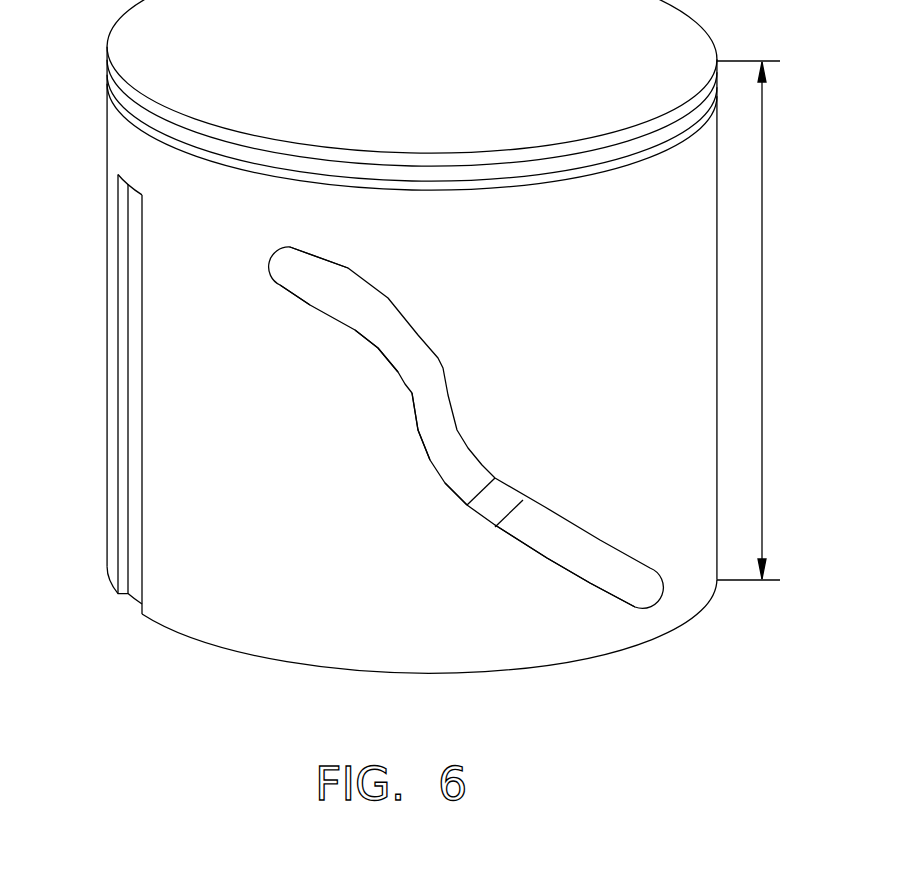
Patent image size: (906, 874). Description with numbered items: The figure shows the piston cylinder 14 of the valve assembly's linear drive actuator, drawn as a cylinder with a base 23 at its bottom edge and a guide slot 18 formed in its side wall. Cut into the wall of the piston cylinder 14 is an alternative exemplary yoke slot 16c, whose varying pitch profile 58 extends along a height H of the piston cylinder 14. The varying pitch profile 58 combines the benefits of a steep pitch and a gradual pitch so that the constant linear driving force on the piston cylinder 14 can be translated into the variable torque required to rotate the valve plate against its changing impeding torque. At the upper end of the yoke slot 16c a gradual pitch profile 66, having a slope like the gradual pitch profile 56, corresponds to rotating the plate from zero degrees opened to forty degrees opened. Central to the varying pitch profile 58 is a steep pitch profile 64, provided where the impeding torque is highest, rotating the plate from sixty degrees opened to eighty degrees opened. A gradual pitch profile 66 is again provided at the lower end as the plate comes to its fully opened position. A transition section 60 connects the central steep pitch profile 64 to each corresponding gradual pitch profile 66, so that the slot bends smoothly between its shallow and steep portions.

The piston cylinder 14 is at (597, 213).
The yoke slot 16c is at (347, 258).
The guide slot 18 is at (133, 295).
The base 23 is at (543, 680).
The gradual pitch profile 56 is at (557, 565).
The varying pitch profile 58 is at (432, 413).
The transition section 60 is at (373, 348).
The steep pitch profile 64 is at (415, 421).
The gradual pitch profile 66 is at (312, 305).
The height H is at (762, 319).